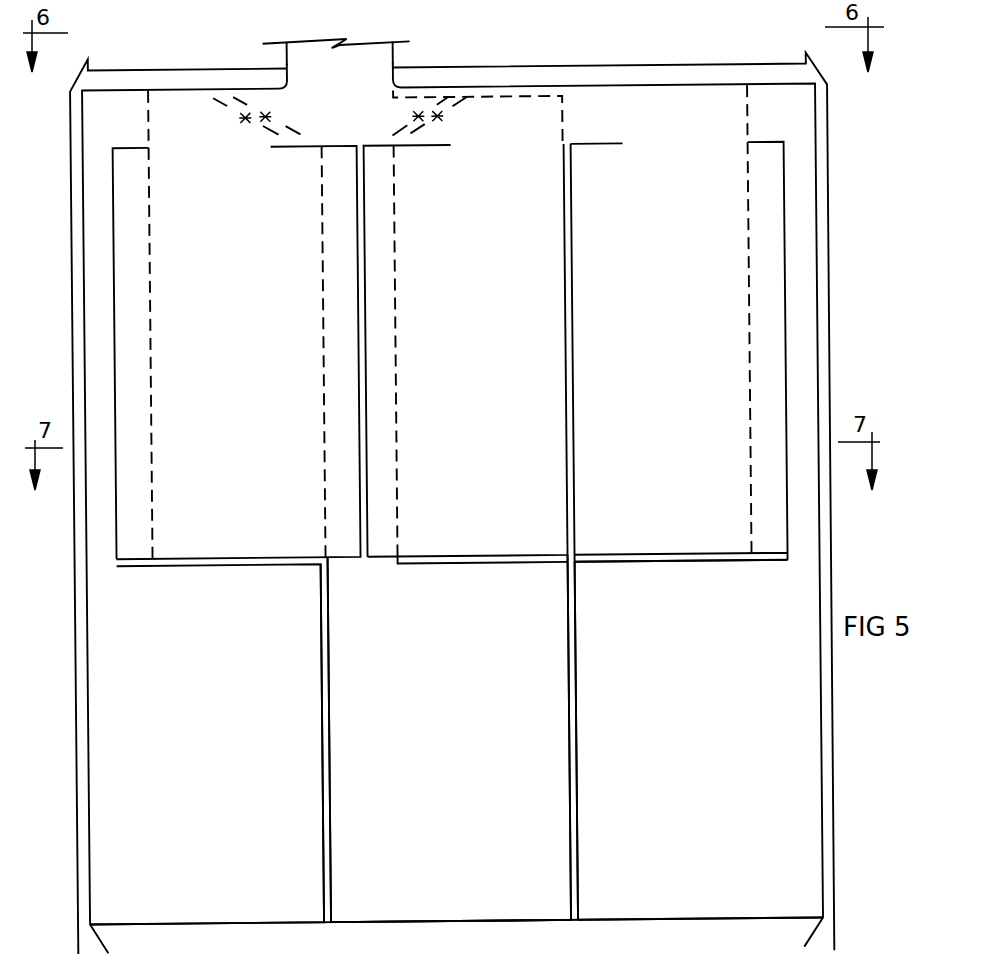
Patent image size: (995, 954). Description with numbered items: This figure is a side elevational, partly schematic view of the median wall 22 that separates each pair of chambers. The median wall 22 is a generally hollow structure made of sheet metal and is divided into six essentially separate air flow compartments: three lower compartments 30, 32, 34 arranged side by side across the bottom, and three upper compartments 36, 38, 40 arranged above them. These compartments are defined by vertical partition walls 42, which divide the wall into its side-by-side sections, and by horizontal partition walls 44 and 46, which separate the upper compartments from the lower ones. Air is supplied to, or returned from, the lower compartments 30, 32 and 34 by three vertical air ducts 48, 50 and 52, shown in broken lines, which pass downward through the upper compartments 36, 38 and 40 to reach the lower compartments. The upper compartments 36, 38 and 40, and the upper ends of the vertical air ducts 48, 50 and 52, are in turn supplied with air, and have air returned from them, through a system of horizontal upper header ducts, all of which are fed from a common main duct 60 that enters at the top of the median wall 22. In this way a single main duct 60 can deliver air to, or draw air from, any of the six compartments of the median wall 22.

The median wall 22 is at (842, 745).
The lower compartment 30 is at (182, 671).
The lower compartment 32 is at (443, 669).
The lower compartment 34 is at (680, 666).
The upper compartment 36 is at (219, 327).
The upper compartment 38 is at (455, 324).
The upper compartment 40 is at (647, 324).
The vertical partition wall 42 is at (324, 741).
The horizontal partition wall 44 is at (460, 921).
The horizontal partition wall 46 is at (487, 557).
The vertical air duct 48 is at (108, 433).
The vertical air duct 50 is at (326, 462).
The vertical air duct 52 is at (798, 429).
The main duct 60 is at (398, 53).